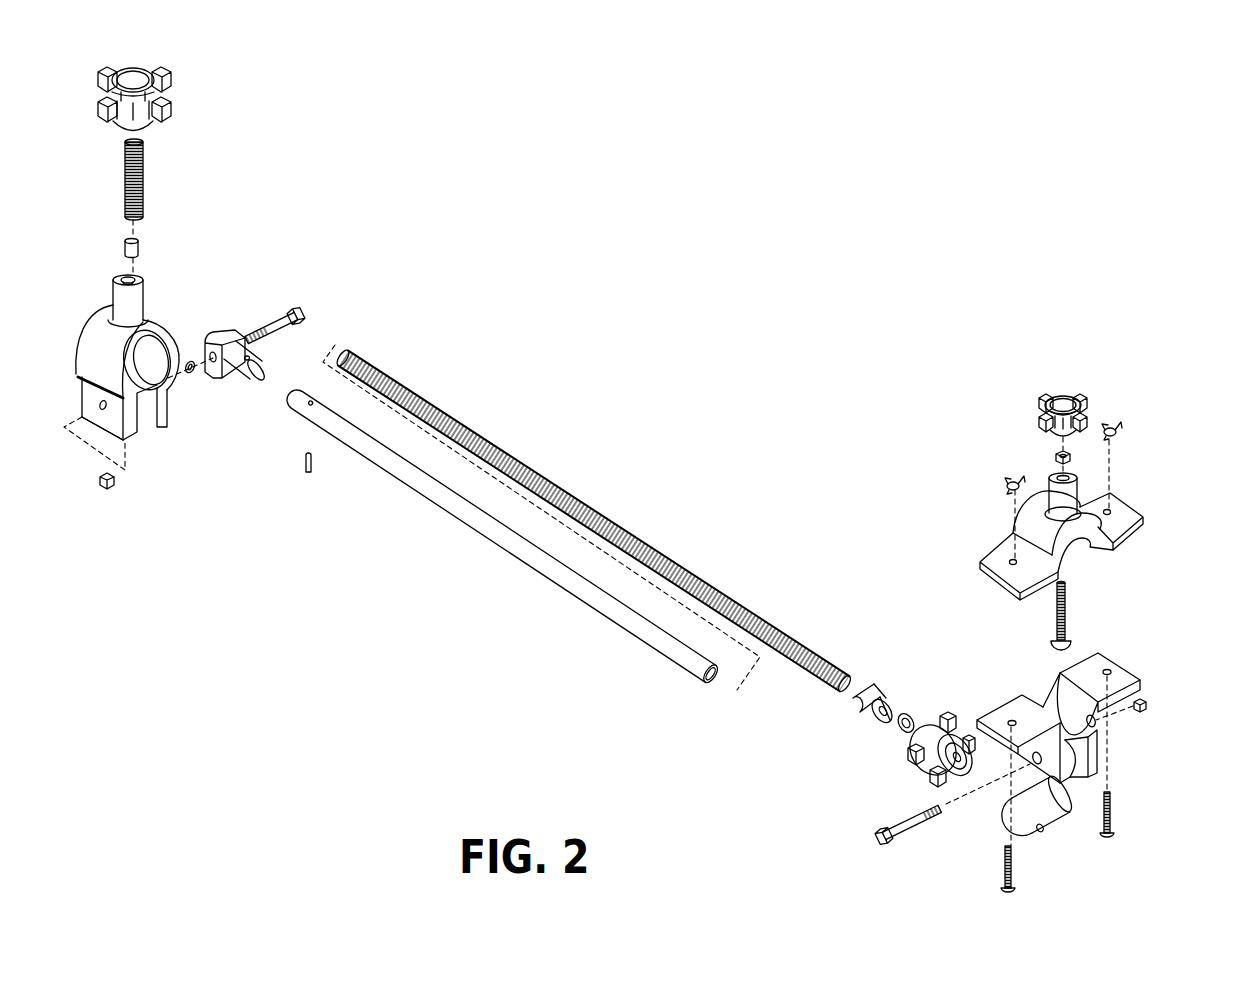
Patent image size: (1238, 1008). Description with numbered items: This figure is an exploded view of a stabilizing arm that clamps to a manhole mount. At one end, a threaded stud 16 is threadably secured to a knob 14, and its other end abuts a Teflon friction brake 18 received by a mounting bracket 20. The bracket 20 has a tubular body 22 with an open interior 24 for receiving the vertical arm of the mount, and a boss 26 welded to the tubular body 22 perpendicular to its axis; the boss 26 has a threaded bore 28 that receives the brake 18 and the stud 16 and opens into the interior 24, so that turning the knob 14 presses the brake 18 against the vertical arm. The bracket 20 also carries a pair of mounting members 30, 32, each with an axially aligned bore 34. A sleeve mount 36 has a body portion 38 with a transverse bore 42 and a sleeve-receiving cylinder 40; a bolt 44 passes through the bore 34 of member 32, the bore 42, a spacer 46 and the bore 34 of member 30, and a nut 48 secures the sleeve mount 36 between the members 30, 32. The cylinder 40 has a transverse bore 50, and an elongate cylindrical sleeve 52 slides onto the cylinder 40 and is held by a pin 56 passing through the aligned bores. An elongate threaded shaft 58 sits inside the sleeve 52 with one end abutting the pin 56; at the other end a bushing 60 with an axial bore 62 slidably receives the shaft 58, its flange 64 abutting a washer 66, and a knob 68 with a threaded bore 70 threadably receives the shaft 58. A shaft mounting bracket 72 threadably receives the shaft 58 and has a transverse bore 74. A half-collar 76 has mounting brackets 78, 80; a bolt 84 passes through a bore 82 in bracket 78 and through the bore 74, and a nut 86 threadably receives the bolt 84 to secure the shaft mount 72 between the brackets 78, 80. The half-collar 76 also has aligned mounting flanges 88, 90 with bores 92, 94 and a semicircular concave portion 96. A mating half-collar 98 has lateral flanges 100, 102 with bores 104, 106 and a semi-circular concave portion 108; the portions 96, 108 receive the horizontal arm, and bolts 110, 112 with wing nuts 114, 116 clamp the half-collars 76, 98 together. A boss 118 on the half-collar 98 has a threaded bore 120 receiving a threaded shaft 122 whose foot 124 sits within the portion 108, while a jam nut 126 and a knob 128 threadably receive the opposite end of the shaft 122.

The knob 14 is at (165, 72).
The threaded stud 16 is at (147, 178).
The Teflon friction brake 18 is at (140, 246).
The mounting bracket 20 is at (77, 335).
The tubular body 22 is at (86, 366).
The open interior 24 is at (160, 372).
The boss 26 is at (140, 300).
The threaded bore 28 is at (140, 282).
The mounting member 30 is at (128, 446).
The mounting member 32 is at (165, 425).
The axially aligned bore 34 is at (100, 408).
The sleeve mount 36 is at (220, 333).
The body portion 38 is at (225, 338).
The sleeve-receiving cylinder 40 is at (265, 372).
The transverse bore 42 is at (218, 365).
The bolt 44 is at (312, 312).
The spacer 46 is at (192, 362).
The nut 48 is at (110, 490).
The transverse bore 50 is at (255, 362).
The elongate cylindrical sleeve 52 is at (500, 545).
The pin 56 is at (312, 462).
The threaded shaft 58 is at (598, 500).
The bushing 60 is at (871, 688).
The axial bore 62 is at (888, 707).
The flange 64 is at (873, 720).
The washer 66 is at (912, 716).
The knob 68 is at (915, 768).
The threaded bore 70 is at (960, 762).
The shaft mounting bracket 72 is at (1027, 822).
The transverse bore 74 is at (1035, 838).
The half-collar 76 is at (1142, 694).
The mounting bracket 78 is at (1060, 787).
The mounting bracket 80 is at (1097, 760).
The bore 82 is at (1035, 762).
The bolt 84 is at (905, 835).
The nut 86 is at (1150, 707).
The mounting flange 88 is at (1100, 657).
The mounting flange 90 is at (1000, 710).
The bore 92 is at (1110, 673).
The bore 94 is at (1012, 720).
The semicircular concave portion 96 is at (1095, 722).
The mating half-collar 98 is at (1019, 522).
The flange 100 is at (990, 562).
The flange 102 is at (1138, 518).
The bore 104 is at (1013, 565).
The bore 106 is at (1110, 513).
The semi-circular concave portion 108 is at (1095, 547).
The bolt 110 is at (1005, 868).
The bolt 112 is at (1112, 818).
The wing nut 114 is at (1005, 485).
The wing nut 116 is at (1120, 430).
The boss 118 is at (1073, 495).
The threaded bore 120 is at (1082, 463).
The threaded shaft 122 is at (1066, 602).
The foot 124 is at (1068, 642).
The jam nut 126 is at (1056, 456).
The knob 128 is at (1046, 404).